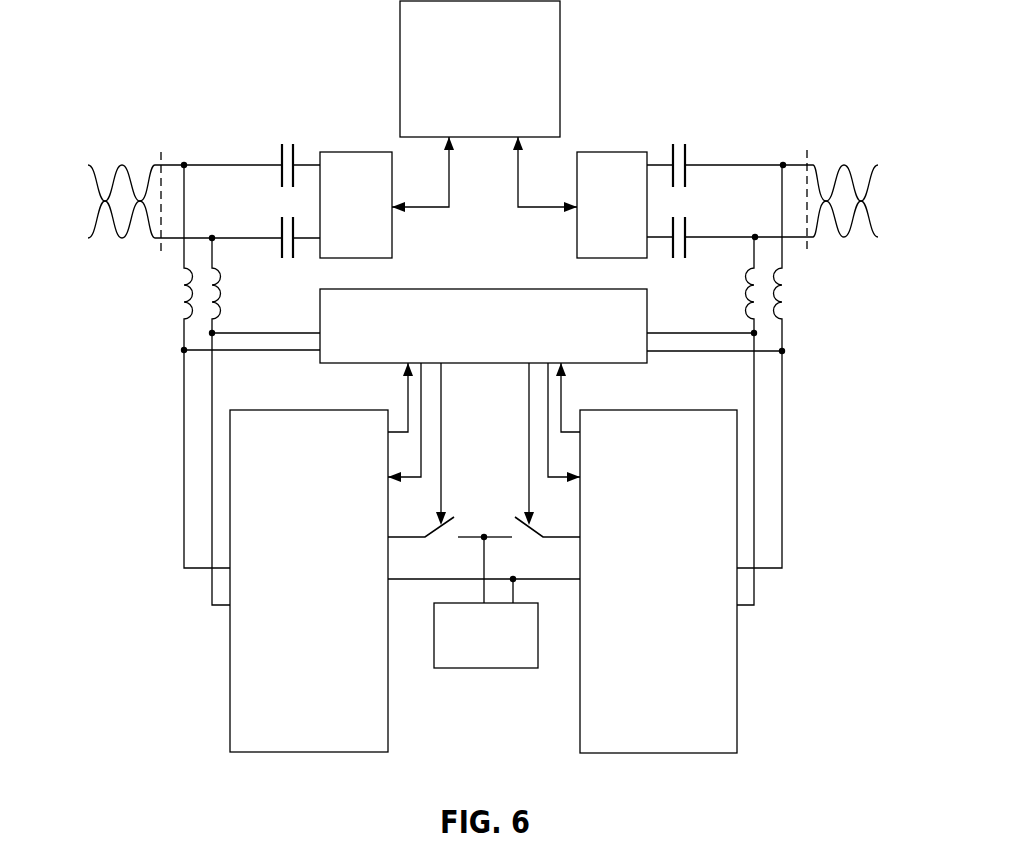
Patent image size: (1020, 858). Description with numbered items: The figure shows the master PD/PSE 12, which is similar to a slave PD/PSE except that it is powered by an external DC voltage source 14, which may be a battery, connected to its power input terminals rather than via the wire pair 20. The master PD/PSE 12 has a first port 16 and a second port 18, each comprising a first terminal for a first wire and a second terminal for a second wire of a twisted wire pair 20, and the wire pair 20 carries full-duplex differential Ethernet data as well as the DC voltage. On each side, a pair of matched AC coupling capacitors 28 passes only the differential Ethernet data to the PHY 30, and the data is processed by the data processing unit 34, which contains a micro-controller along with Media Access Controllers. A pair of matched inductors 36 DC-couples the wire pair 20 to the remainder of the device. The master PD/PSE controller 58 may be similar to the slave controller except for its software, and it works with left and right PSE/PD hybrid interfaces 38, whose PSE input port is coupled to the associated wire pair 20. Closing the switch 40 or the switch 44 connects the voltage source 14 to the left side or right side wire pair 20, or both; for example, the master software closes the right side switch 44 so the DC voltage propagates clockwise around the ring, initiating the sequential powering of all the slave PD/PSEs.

The master PD/PSE 12 is at (244, 62).
The voltage source 14 is at (485, 670).
The first port 16 is at (229, 140).
The second port 18 is at (740, 140).
The twisted wire pair 20 is at (120, 240).
The matched AC coupling capacitors 28 is at (284, 143).
The PHY 30 is at (362, 150).
The data processing unit 34 is at (561, 62).
The matched inductors 36 is at (158, 296).
The PSE/PD hybrid interface 38 is at (230, 704).
The switch 40 is at (458, 528).
The switch 44 is at (510, 528).
The master PD/PSE controller 58 is at (483, 258).